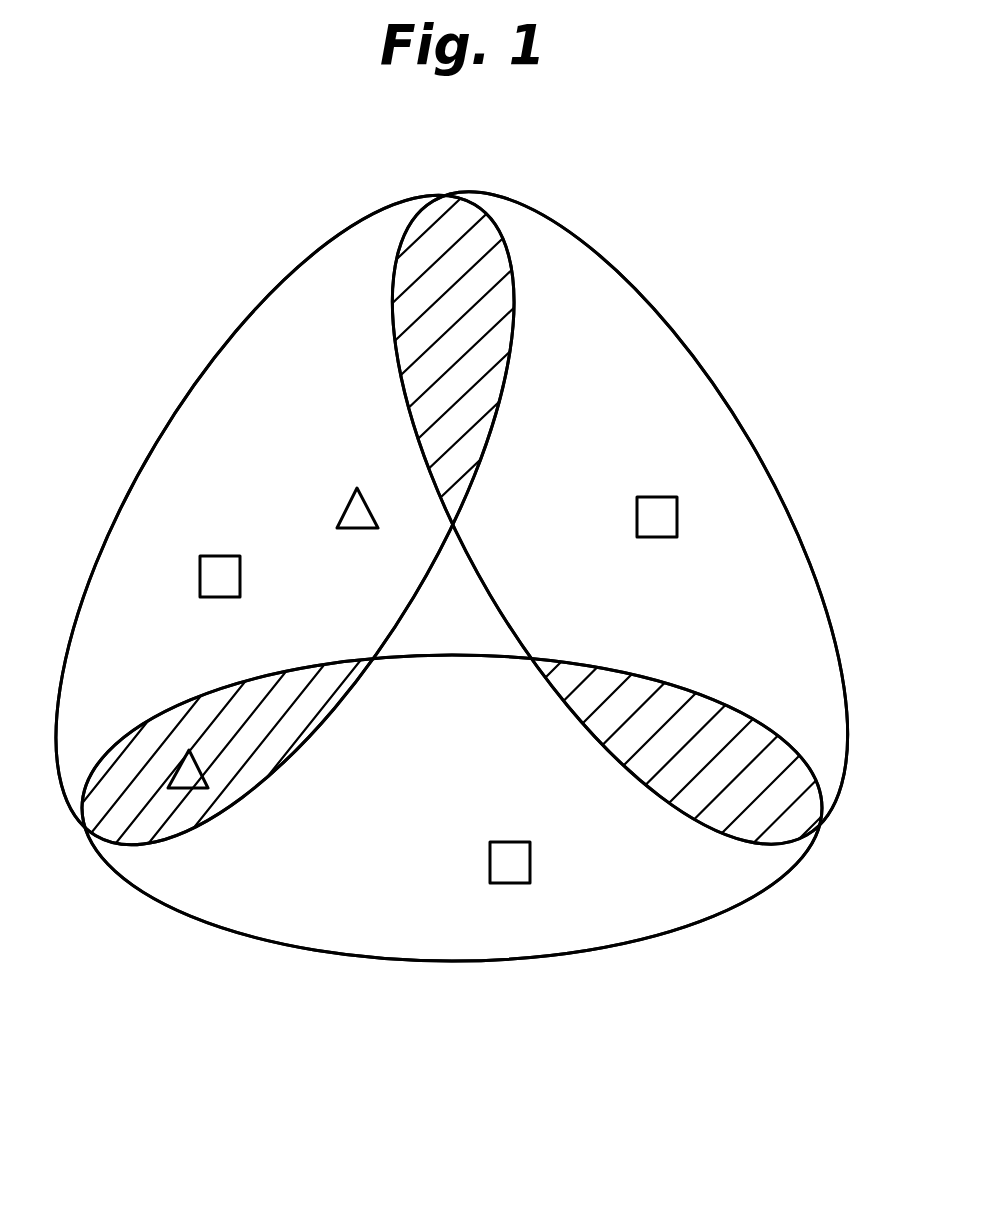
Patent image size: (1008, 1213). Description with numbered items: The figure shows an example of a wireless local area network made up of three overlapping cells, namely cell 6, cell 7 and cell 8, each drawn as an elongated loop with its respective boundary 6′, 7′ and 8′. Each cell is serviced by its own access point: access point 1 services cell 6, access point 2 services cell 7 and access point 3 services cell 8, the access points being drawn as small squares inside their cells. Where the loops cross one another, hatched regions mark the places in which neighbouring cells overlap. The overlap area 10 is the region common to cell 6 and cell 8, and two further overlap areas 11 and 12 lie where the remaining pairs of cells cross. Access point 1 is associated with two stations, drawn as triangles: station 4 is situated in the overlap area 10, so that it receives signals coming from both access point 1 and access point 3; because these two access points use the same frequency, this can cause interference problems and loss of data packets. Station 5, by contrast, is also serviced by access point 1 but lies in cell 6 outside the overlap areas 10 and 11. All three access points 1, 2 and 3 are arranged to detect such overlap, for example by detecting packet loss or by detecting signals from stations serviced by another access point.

The access point 1 is at (218, 576).
The access point 2 is at (655, 515).
The access point 3 is at (512, 860).
The station 4 is at (190, 748).
The station 5 is at (340, 510).
The cell 6 is at (140, 460).
The cell boundary 6′ is at (225, 375).
The cell 7 is at (640, 290).
The cell boundary 7′ is at (752, 488).
The cell 8 is at (320, 953).
The cell boundary 8′ is at (478, 950).
The overlap area 10 is at (118, 810).
The overlap area 11 is at (437, 237).
The overlap area 12 is at (778, 800).